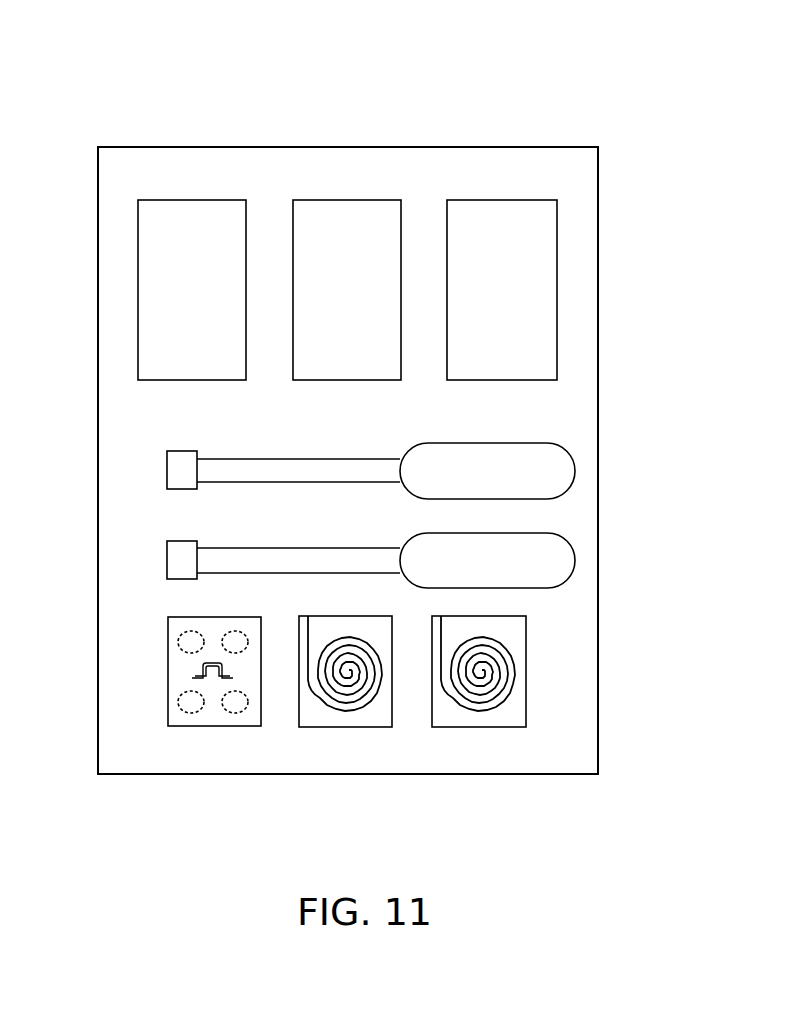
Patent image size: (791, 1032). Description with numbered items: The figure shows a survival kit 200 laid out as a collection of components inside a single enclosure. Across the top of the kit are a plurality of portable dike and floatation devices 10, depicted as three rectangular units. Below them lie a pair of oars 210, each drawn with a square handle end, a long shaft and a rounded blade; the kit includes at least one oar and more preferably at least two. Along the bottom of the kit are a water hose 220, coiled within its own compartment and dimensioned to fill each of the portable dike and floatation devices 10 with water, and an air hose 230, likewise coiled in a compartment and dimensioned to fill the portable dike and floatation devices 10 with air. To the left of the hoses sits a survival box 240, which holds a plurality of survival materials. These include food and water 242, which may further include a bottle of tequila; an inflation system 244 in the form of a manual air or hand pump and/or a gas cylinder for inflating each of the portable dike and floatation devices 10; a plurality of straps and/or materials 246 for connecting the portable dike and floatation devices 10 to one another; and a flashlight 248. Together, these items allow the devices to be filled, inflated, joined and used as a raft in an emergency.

The survival kit 200 is at (577, 84).
The portable dike and floatation device 10 is at (168, 296).
The oar 210 is at (547, 467).
The water hose 220 is at (487, 712).
The air hose 230 is at (348, 712).
The survival box 240 is at (208, 704).
The food and water 242 is at (188, 712).
The inflation system 244 is at (230, 712).
The straps and/or materials 246 is at (237, 630).
The flashlight 248 is at (188, 630).